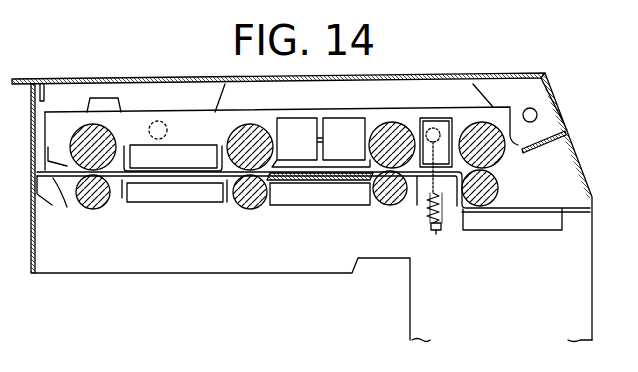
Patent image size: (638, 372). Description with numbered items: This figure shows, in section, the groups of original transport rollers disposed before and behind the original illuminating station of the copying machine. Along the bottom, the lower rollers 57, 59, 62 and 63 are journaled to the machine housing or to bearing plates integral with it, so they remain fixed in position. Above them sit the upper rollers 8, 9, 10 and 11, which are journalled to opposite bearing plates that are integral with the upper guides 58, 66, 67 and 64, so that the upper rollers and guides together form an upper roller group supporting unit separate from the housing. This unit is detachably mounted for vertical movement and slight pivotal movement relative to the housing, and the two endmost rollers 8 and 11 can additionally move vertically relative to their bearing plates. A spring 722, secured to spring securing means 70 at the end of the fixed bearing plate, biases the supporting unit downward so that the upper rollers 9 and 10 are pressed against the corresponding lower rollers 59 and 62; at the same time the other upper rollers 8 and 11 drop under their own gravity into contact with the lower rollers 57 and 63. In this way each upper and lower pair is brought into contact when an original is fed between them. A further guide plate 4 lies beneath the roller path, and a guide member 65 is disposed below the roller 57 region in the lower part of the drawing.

The guide plate 4 is at (310, 194).
The upper roller 8 is at (122, 122).
The upper roller 9 is at (250, 128).
The upper roller 10 is at (388, 122).
The upper roller 11 is at (494, 125).
The lower roller 57 is at (105, 206).
The upper guide 58 is at (89, 215).
The lower roller 59 is at (250, 208).
The lower roller 62 is at (387, 202).
The lower roller 63 is at (498, 178).
The upper guide 64 is at (426, 152).
The guide member 65 is at (182, 194).
The upper guide 66 is at (192, 158).
The upper guide 67 is at (343, 126).
The spring securing means 70 is at (436, 234).
The spring 722 is at (447, 215).